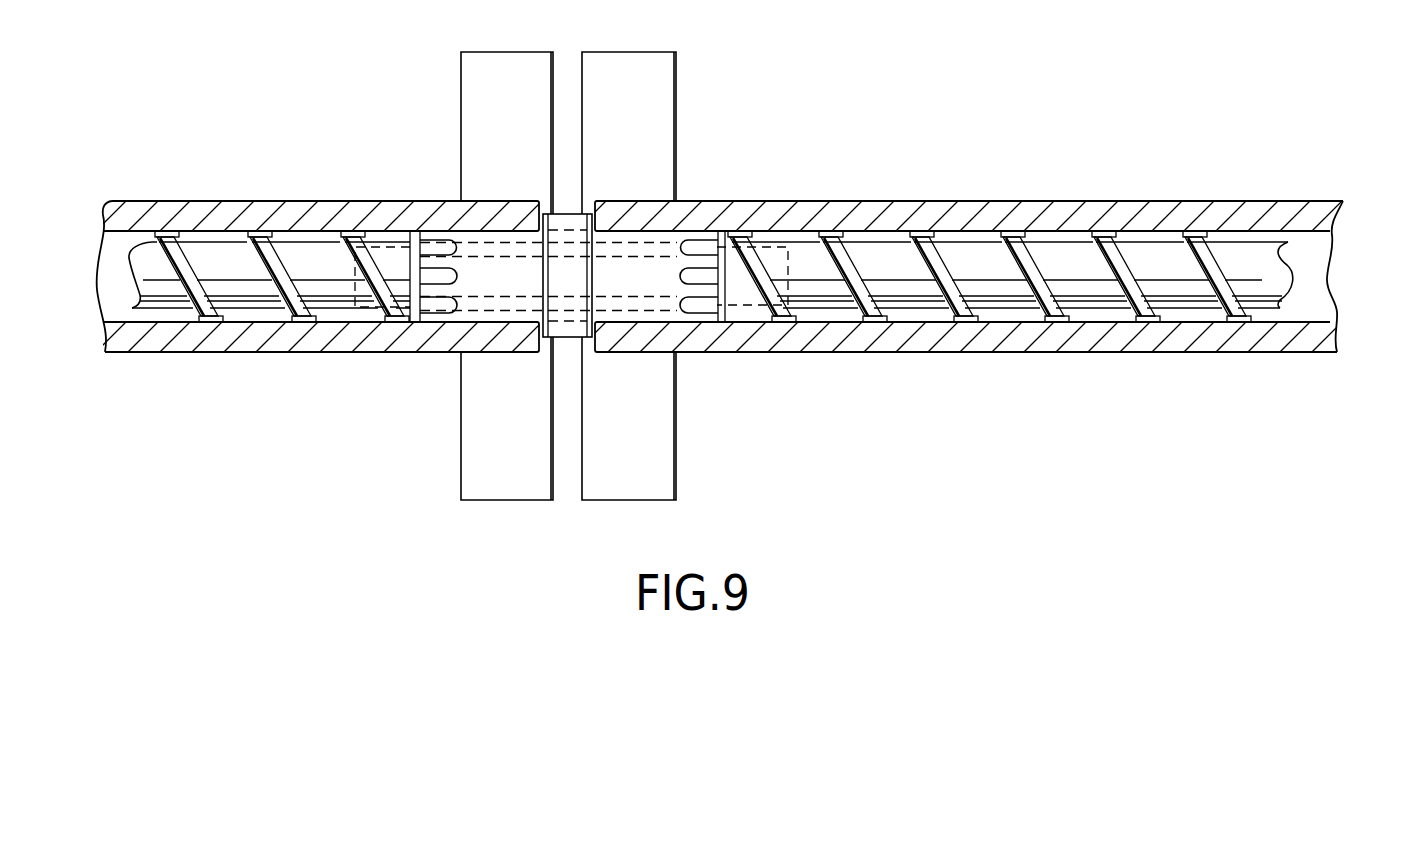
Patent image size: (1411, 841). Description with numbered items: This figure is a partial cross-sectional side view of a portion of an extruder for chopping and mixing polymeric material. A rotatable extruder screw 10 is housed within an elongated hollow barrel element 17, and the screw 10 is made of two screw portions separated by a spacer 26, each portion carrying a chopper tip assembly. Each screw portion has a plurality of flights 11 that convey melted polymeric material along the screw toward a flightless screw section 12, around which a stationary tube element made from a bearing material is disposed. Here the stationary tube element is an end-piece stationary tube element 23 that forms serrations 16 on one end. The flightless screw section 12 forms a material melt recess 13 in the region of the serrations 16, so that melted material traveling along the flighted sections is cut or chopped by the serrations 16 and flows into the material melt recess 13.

The rotatable extruder screw 10 is at (1058, 221).
The flights 11 is at (1034, 250).
The flightless screw section 12 is at (735, 345).
The material melt recess 13 is at (473, 287).
The serrations 16 is at (717, 297).
The elongated hollow barrel element 17 is at (1088, 352).
The end-piece stationary tube element 23 is at (463, 229).
The spacer 26 is at (562, 214).